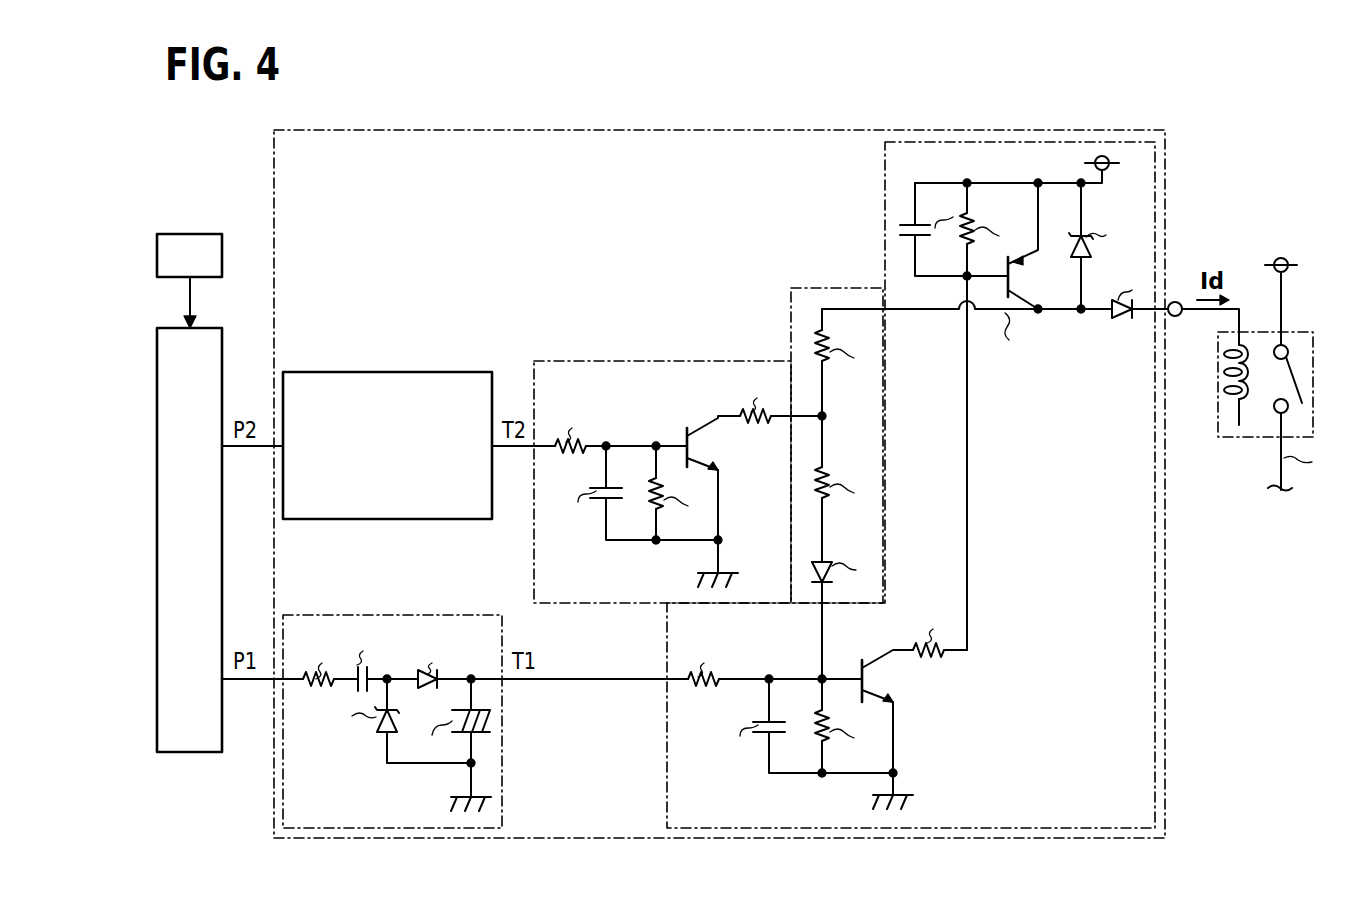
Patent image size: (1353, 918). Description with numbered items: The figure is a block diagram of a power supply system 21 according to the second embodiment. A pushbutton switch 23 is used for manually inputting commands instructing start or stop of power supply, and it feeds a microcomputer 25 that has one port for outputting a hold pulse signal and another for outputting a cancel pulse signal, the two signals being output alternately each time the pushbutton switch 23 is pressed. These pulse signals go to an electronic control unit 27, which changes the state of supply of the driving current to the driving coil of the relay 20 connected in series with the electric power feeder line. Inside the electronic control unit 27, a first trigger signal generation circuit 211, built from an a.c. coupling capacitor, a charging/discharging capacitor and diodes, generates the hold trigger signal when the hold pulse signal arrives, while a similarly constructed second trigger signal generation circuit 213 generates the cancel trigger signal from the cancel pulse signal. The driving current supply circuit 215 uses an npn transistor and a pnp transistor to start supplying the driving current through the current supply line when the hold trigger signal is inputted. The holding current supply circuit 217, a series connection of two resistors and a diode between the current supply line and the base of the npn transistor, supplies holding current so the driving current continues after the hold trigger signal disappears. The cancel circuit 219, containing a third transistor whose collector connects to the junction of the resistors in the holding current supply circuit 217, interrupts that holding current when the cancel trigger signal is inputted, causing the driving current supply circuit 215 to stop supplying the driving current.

The relay RLY 20 is at (1311, 330).
The power supply system 21 is at (228, 156).
The pushbutton switch 23 is at (200, 234).
The microcomputer 25 is at (200, 328).
The electronic control unit (ECU) 27 is at (371, 126).
The first trigger signal generation circuit 211 is at (320, 614).
The second trigger signal generation circuit 213 is at (320, 372).
The driving current supply circuit 215 is at (885, 188).
The holding current supply circuit 217 is at (838, 287).
The cancel circuit 219 is at (580, 360).